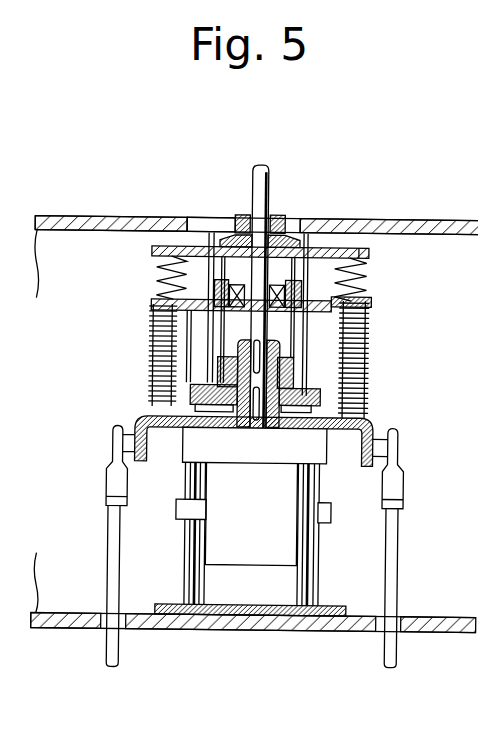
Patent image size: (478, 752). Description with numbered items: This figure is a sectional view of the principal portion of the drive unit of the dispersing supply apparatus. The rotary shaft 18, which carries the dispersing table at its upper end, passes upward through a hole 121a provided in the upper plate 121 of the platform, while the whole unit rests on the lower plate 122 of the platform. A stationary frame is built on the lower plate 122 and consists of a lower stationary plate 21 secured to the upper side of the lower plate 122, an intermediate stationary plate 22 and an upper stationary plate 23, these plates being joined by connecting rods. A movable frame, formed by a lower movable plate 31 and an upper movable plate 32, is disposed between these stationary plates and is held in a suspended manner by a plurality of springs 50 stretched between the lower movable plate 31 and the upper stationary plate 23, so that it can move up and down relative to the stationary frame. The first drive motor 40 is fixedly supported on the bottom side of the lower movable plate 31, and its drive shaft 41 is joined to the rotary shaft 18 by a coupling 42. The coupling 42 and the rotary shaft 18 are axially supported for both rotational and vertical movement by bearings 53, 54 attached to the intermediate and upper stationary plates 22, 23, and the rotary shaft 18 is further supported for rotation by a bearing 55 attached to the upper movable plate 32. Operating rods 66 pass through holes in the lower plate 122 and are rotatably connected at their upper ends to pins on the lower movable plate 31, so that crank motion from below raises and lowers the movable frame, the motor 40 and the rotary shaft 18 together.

The rotary shaft 18 is at (268, 179).
The bearing 54 is at (282, 222).
The upper plate 121 is at (450, 228).
The hole 121a is at (200, 223).
The upper stationary plate 23 is at (368, 253).
The springs 50 is at (155, 276).
The upper movable plate 32 is at (317, 307).
The bearing 55 is at (152, 307).
The coupling 42 is at (336, 341).
The intermediate stationary plate 22 is at (328, 400).
The bearing 53 is at (206, 367).
The lower movable plate 31 is at (360, 428).
The drive shaft 41 is at (256, 463).
The first drive motor 40 is at (265, 560).
The lower stationary plate 21 is at (334, 606).
The operating rods 66 is at (112, 557).
The lower plate 122 is at (446, 624).